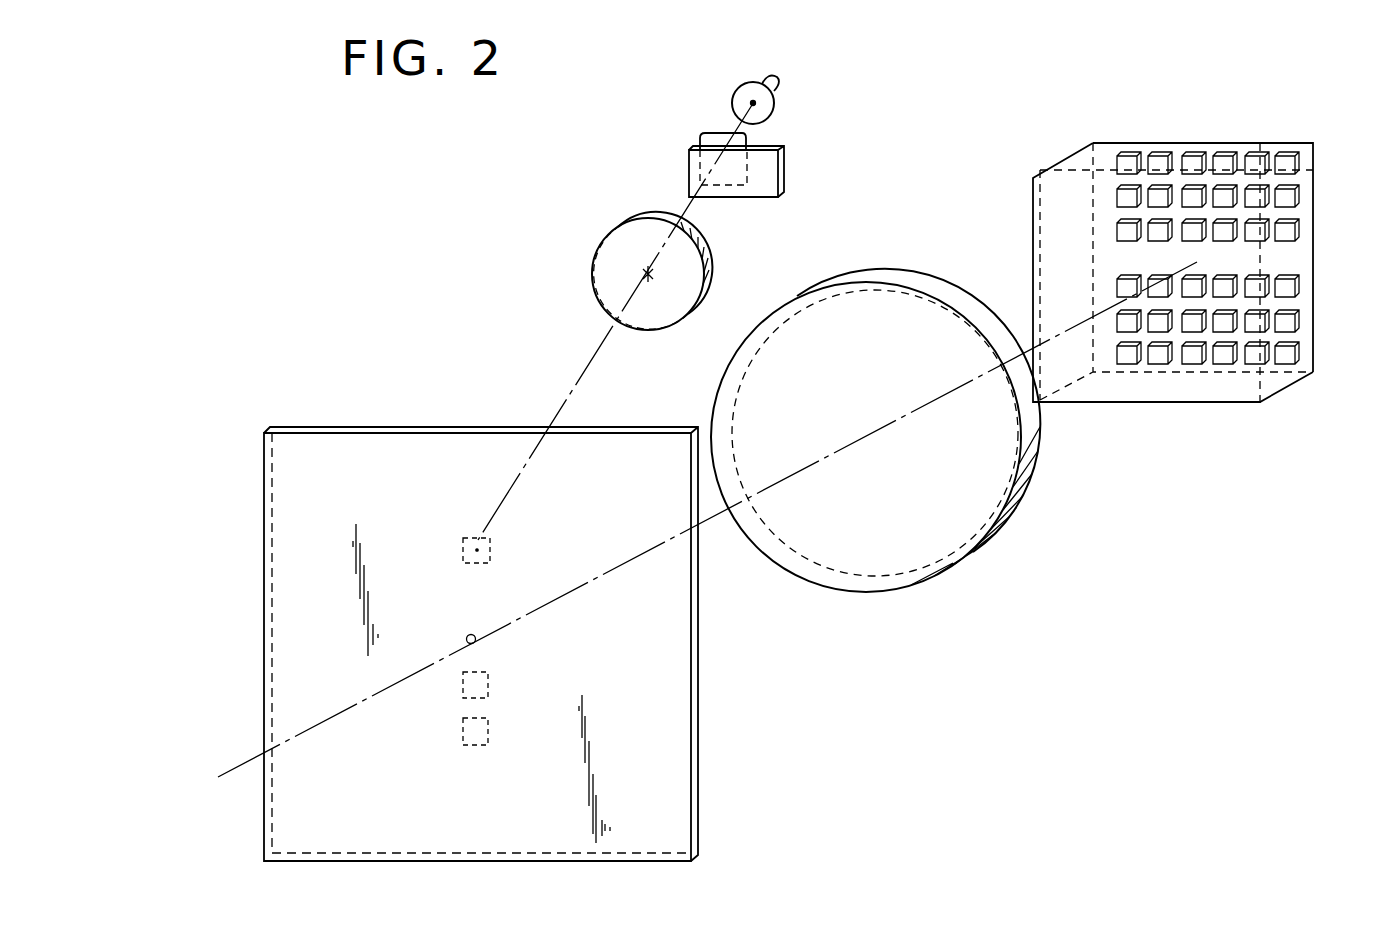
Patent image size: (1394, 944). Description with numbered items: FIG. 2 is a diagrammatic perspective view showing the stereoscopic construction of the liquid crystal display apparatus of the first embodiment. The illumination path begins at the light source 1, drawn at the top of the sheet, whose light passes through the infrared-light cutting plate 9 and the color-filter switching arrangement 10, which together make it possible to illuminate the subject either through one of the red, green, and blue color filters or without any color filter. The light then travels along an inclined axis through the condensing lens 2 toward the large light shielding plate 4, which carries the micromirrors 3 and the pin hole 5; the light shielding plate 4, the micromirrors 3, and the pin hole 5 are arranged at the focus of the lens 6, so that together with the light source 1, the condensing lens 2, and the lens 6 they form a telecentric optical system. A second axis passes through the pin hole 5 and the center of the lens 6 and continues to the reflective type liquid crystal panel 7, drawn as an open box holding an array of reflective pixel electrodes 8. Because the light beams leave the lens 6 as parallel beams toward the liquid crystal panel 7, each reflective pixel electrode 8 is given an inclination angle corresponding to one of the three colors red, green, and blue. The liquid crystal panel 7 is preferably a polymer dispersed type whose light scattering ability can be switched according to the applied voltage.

The light source 1 is at (782, 95).
The condensing lens 2 is at (620, 251).
The micromirror 3 is at (465, 537).
The light shielding plate 4 is at (675, 761).
The pin hole 5 is at (476, 641).
The lens 6 is at (945, 530).
The reflective type liquid crystal panel 7 is at (1072, 163).
The reflective pixel electrode 8 is at (1290, 168).
The infrared-light cutting plate 9 is at (713, 131).
The color-filter switching arrangement 10 is at (775, 175).